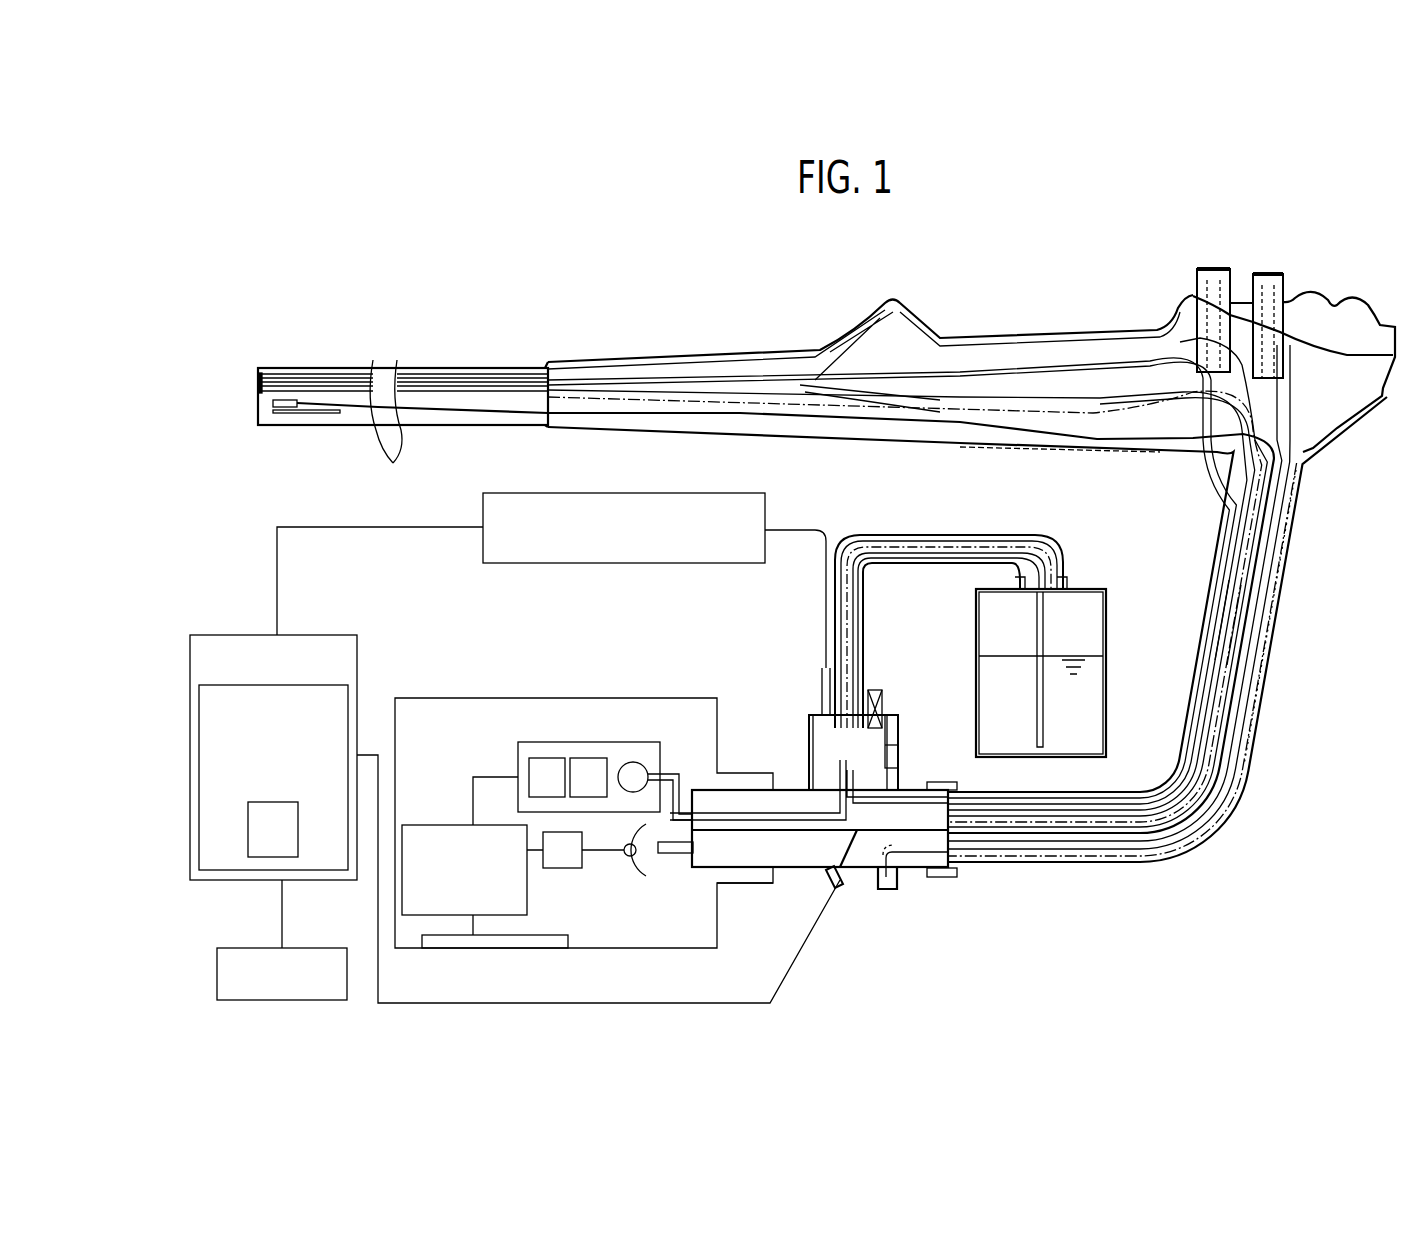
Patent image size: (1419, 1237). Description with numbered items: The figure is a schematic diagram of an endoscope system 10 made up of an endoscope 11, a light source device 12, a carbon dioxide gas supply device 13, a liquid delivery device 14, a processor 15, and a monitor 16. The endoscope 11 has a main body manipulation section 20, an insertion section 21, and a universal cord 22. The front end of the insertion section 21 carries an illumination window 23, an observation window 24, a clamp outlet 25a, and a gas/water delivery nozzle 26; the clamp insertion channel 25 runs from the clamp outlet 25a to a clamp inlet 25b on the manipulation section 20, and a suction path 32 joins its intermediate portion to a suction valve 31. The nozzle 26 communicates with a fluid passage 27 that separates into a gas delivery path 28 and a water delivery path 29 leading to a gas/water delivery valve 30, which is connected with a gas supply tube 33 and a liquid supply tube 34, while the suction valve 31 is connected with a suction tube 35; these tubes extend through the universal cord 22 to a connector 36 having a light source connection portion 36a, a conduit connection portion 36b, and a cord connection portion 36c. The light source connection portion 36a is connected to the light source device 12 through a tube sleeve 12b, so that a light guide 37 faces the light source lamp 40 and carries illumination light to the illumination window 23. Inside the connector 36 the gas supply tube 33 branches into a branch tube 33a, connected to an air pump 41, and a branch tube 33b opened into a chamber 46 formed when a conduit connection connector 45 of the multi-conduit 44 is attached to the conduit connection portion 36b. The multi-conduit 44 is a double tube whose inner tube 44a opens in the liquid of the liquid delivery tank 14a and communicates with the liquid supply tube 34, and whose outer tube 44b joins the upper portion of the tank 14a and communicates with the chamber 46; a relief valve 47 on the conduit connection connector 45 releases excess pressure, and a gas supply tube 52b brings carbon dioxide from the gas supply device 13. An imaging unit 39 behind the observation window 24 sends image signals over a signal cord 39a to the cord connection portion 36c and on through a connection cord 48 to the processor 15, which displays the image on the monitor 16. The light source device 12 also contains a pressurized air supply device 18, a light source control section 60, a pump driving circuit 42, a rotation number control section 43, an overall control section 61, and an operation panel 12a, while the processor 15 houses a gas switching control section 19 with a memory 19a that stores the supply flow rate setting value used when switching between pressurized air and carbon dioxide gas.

The endoscope system 10 is at (1090, 896).
The endoscope 11 is at (738, 350).
The light source device 12 is at (445, 698).
The operation panel 12a is at (495, 940).
The tube sleeve 12b is at (750, 883).
The carbon dioxide gas supply device 13 is at (575, 493).
The liquid delivery device 14 is at (1068, 586).
The liquid delivery tank 14a is at (1107, 630).
The processor 15 is at (285, 635).
The monitor 16 is at (245, 948).
The pressurized air supply device 18 is at (575, 742).
The gas switching control section 19 is at (1260, 568).
The memory 19a is at (291, 840).
The main body manipulation section 20 is at (1103, 330).
The insertion section 21 is at (432, 362).
The universal cord 22 is at (1230, 823).
The illumination window 23 is at (258, 412).
The observation window 24 is at (258, 399).
The clamp insertion channel 25 is at (625, 385).
The clamp outlet 25a is at (262, 370).
The clamp inlet 25b is at (905, 318).
The gas/water delivery nozzle 26 is at (258, 384).
The fluid passage 27 is at (295, 390).
The gas delivery path 28 is at (985, 380).
The water delivery path 29 is at (1055, 390).
The gas/water delivery valve 30 is at (1215, 290).
The suction valve 31 is at (1268, 292).
The suction path 32 is at (1105, 410).
The gas supply tube 33 is at (1232, 640).
The branch tube 33a is at (702, 800).
The branch tube 33b is at (840, 790).
The liquid supply tube 34 is at (1225, 605).
The suction tube 35 is at (1272, 524).
The connector 36 is at (906, 872).
The light source connection portion 36a is at (770, 845).
The conduit connection portion 36b is at (815, 735).
The cord connection portion 36c is at (833, 888).
The light guide 37 is at (323, 415).
The imaging unit 39 is at (272, 410).
The signal cord 39a is at (388, 428).
The light source lamp 40 is at (636, 858).
The air pump 41 is at (652, 762).
The pump driving circuit 42 is at (557, 791).
The rotation number control section 43 is at (598, 791).
The multi-conduit 44 is at (878, 532).
The inner tube 44a is at (925, 548).
The outer tube 44b is at (975, 535).
The conduit connection connector 45 is at (896, 713).
The chamber 46 is at (880, 748).
The relief valve 47 is at (874, 690).
The connection cord 48 is at (795, 987).
The gas supply tube 52b is at (826, 620).
The light source control section 60 is at (575, 861).
The overall control section 61 is at (455, 825).